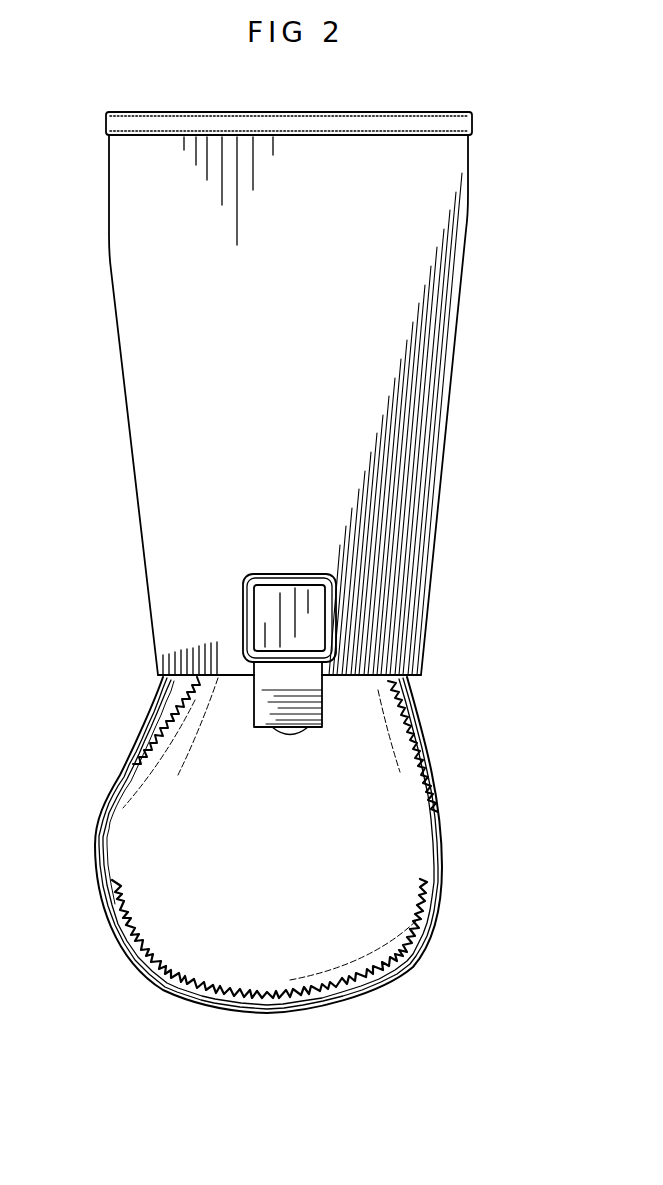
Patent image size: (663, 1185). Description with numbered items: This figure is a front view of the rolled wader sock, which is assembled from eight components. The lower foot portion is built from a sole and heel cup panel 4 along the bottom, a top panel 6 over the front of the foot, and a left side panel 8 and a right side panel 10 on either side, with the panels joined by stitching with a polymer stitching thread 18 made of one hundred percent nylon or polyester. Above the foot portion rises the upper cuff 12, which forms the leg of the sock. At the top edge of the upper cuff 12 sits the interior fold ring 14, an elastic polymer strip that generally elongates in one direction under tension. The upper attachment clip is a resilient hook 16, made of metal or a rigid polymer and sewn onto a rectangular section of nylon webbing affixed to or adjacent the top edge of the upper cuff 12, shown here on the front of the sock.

The sole and heel cup panel 4 is at (427, 947).
The top panel 6 is at (408, 832).
The left side panel 8 is at (157, 677).
The right side panel 10 is at (410, 688).
The upper cuff 12 is at (437, 207).
The interior fold ring 14 is at (433, 118).
The resilient hook 16 is at (307, 693).
The polymer stitching thread 18 is at (313, 608).